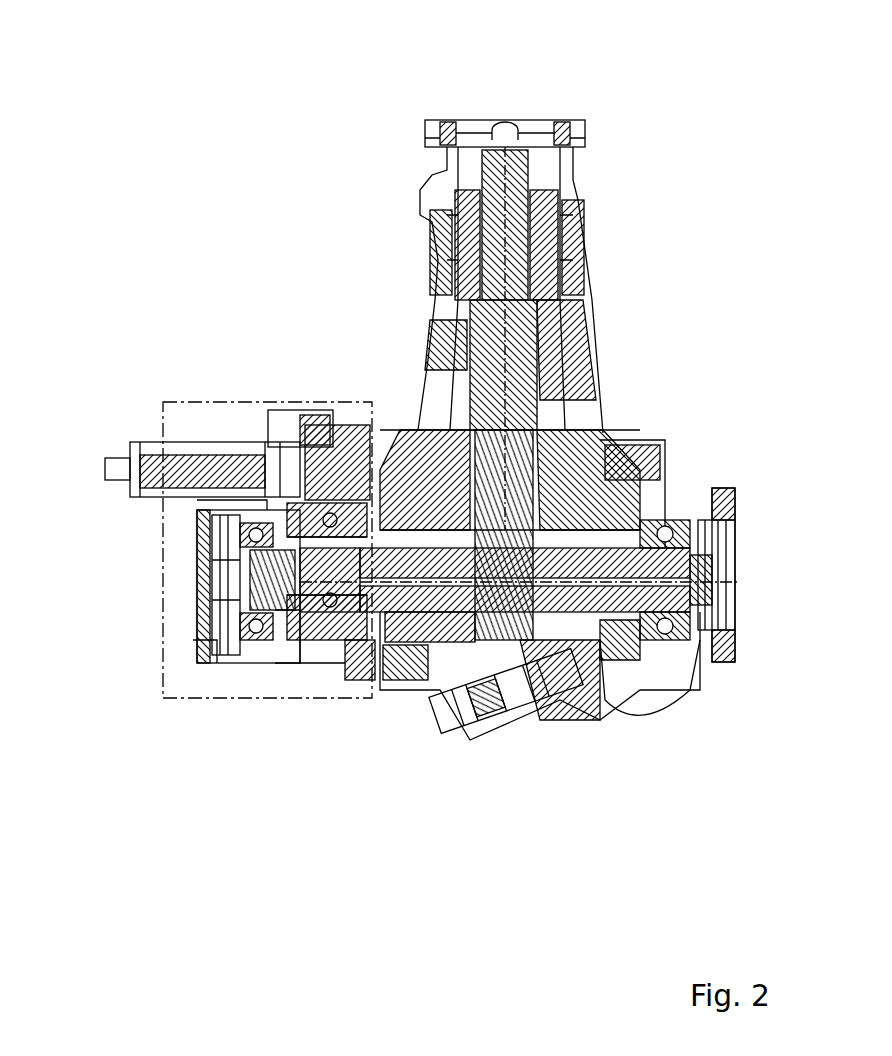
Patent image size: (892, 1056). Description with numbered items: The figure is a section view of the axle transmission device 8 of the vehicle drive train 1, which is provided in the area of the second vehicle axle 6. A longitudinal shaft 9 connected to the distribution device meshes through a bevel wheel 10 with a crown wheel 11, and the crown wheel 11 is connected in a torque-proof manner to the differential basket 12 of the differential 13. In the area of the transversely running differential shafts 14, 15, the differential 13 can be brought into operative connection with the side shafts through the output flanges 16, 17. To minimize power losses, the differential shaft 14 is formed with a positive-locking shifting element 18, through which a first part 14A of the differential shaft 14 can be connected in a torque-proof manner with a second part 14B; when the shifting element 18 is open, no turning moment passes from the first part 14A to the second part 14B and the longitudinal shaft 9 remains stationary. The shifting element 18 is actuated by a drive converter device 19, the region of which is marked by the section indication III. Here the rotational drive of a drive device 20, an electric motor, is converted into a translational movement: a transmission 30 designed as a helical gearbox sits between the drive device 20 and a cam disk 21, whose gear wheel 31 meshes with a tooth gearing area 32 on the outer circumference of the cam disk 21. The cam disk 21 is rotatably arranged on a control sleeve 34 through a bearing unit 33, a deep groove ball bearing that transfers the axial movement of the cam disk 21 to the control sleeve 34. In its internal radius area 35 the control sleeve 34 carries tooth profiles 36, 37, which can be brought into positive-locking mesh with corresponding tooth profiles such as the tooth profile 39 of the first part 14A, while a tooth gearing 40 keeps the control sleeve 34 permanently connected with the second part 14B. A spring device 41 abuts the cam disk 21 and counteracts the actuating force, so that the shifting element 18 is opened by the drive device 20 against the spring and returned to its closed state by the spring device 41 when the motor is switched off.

The vehicle drive train 1 is at (236, 188).
The second vehicle axle 6 is at (673, 665).
The axle transmission device 8 is at (349, 312).
The longitudinal shaft 9 is at (583, 294).
The bevel wheel 10 is at (592, 350).
The crown wheel 11 is at (600, 410).
The differential basket 12 is at (642, 436).
The differential 13 is at (572, 700).
The differential shaft 14 is at (378, 668).
The first part of the differential shaft 14A is at (243, 630).
The second part of the differential shaft 14B is at (410, 683).
The differential shaft 15 is at (667, 502).
The output flange 16 is at (130, 468).
The output flange 17 is at (733, 493).
The positive-locking shifting element 18 is at (278, 640).
The drive converter device 19 is at (262, 485).
The drive device 20 is at (288, 455).
The cam disk 21 is at (333, 640).
The transmission 30 is at (375, 425).
The gear wheel 31 is at (352, 428).
The tooth gearing area 32 is at (350, 650).
The bearing unit 33 is at (205, 537).
The control sleeve 34 is at (200, 565).
The internal radius area 35 is at (200, 587).
The tooth profile 36 is at (243, 637).
The tooth profile 37 is at (307, 640).
The tooth profile 39 is at (250, 636).
The tooth gearing 40 is at (262, 448).
The spring device 41 is at (300, 445).
The detail section III is at (338, 438).